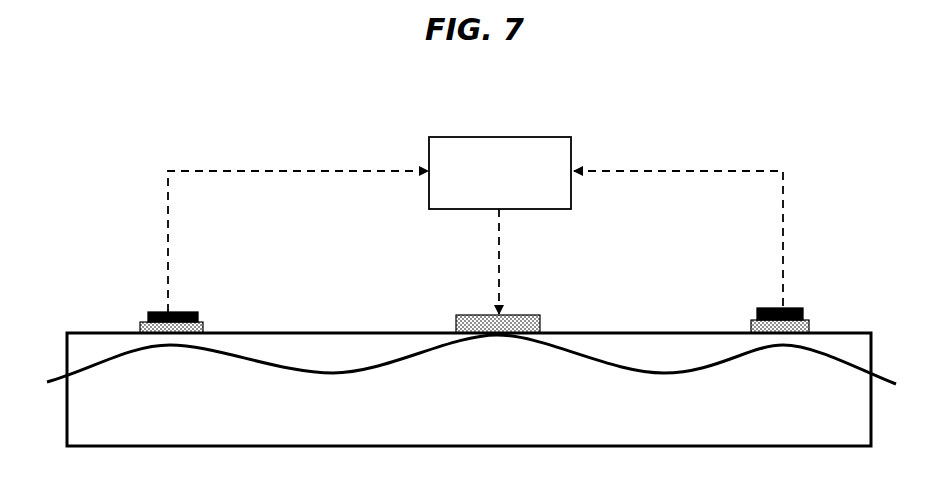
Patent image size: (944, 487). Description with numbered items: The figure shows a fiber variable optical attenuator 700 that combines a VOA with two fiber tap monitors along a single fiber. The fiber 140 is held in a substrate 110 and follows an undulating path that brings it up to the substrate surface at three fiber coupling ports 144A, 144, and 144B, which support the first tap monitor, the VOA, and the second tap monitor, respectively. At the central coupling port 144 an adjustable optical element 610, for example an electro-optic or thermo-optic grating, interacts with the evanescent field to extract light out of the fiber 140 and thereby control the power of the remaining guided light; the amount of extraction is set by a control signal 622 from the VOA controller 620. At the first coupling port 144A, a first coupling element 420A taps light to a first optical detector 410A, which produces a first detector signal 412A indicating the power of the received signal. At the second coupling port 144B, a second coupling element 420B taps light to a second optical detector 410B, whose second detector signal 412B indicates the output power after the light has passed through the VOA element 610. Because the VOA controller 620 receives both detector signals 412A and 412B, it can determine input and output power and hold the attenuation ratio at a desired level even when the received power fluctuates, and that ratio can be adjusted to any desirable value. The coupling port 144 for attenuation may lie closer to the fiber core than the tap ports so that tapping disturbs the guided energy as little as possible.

The fiber variable optical attenuator 700 is at (313, 103).
The substrate 110 is at (833, 426).
The fiber 140 is at (608, 364).
The fiber coupling port 144 is at (497, 338).
The first fiber coupling port 144A is at (168, 345).
The second fiber coupling port 144B is at (783, 345).
The VOA controller 620 is at (572, 150).
The control signal 622 is at (499, 244).
The adjustable optical element 610 is at (535, 315).
The first optical detector 410A is at (141, 311).
The second optical detector 410B is at (768, 307).
The first detector signal 412A is at (170, 245).
The second detector signal 412B is at (782, 202).
The first coupling element 420A is at (205, 332).
The second coupling element 420B is at (752, 330).